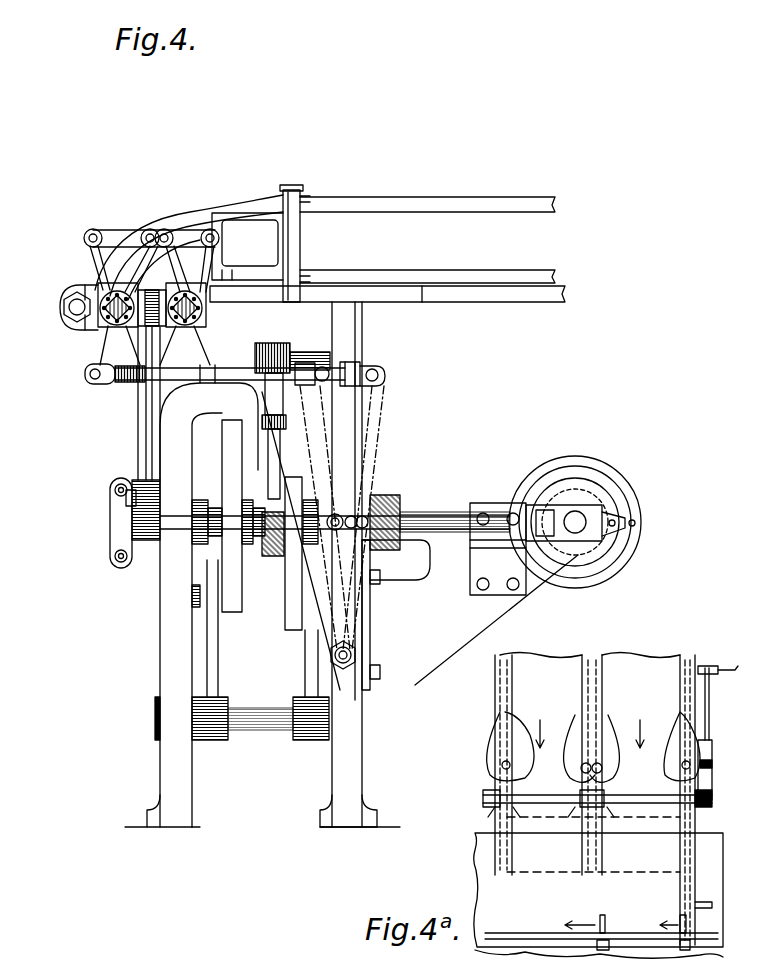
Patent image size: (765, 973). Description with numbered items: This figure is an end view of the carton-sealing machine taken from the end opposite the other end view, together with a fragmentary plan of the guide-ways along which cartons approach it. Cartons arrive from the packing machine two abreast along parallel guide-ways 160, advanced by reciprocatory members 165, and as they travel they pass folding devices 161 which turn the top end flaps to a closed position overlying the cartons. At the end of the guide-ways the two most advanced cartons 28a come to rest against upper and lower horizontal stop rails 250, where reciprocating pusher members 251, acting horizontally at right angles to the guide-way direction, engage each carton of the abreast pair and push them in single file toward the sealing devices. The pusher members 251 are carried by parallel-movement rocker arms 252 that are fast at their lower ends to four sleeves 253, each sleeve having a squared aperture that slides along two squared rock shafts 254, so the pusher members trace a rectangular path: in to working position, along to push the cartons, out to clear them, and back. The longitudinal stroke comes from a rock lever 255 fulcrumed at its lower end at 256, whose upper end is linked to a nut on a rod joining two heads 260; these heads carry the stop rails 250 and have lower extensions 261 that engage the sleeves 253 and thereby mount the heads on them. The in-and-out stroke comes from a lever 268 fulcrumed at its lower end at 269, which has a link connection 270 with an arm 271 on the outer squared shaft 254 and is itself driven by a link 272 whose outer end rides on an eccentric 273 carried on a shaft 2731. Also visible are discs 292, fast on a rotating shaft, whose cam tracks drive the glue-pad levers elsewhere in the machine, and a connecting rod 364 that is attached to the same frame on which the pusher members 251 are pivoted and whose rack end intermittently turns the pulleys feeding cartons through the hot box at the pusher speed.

In FIG. 4, the guide-ways 160 is at (465, 206).
In FIG. 4A, the guide-ways 160 is at (640, 667).
In FIG. 4A, the folding devices 161 is at (603, 723).
In FIG. 4A, the reciprocatory members 165 is at (512, 815).
In FIG. 4A, the cartons 28a is at (558, 872).
In FIG. 4, the stop rails 250 is at (283, 200).
In FIG. 4A, the stop rails 250 is at (666, 926).
In FIG. 4, the pusher members 251 is at (247, 246).
In FIG. 4A, the pusher members 251 is at (605, 917).
In FIG. 4, the rocker arms 252 is at (157, 296).
In FIG. 4, the sleeves 253 is at (200, 320).
In FIG. 4, the squared rock shafts 254 is at (202, 310).
In FIG. 4, the rock lever 255 is at (138, 432).
In FIG. 4, the fulcrum 256 is at (143, 507).
In FIG. 4, the heads 260 is at (205, 210).
In FIG. 4, the lower extensions 261 is at (86, 290).
In FIG. 4, the lever 268 is at (332, 458).
In FIG. 4, the fulcrum 269 is at (360, 655).
In FIG. 4, the link connection 270 is at (225, 380).
In FIG. 4, the arm 271 is at (85, 374).
In FIG. 4, the link 272 is at (431, 518).
In FIG. 4, the eccentric 273 is at (604, 470).
In FIG. 4, the shaft 2731 is at (578, 526).
In FIG. 4, the discs 292 is at (287, 603).
In FIG. 4, the connecting rod 364 is at (64, 305).